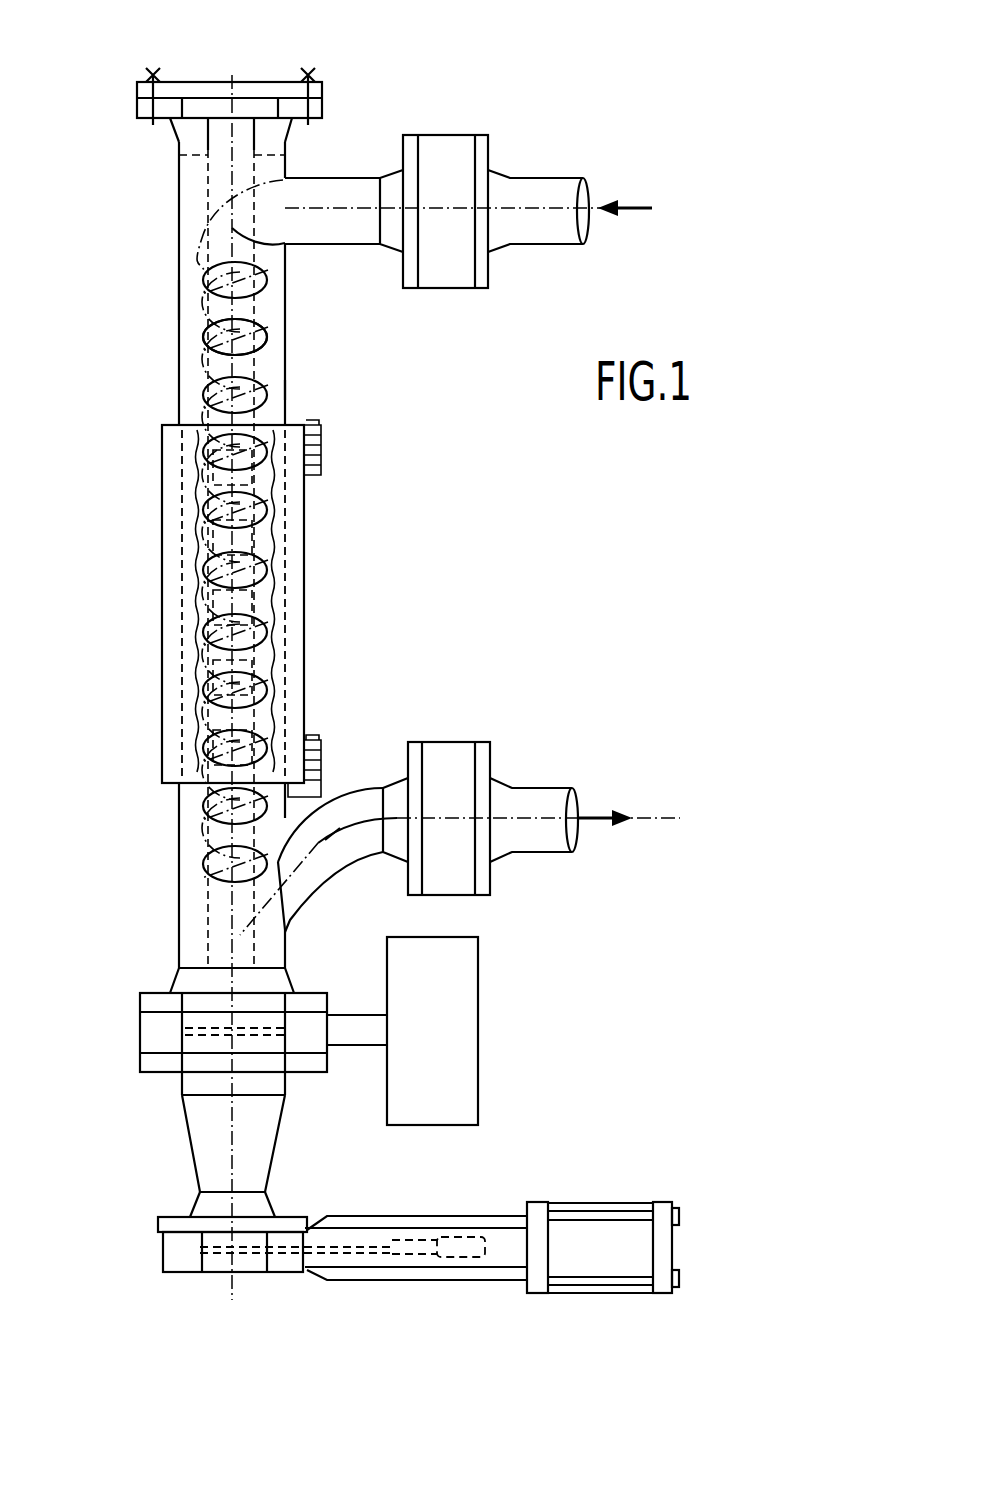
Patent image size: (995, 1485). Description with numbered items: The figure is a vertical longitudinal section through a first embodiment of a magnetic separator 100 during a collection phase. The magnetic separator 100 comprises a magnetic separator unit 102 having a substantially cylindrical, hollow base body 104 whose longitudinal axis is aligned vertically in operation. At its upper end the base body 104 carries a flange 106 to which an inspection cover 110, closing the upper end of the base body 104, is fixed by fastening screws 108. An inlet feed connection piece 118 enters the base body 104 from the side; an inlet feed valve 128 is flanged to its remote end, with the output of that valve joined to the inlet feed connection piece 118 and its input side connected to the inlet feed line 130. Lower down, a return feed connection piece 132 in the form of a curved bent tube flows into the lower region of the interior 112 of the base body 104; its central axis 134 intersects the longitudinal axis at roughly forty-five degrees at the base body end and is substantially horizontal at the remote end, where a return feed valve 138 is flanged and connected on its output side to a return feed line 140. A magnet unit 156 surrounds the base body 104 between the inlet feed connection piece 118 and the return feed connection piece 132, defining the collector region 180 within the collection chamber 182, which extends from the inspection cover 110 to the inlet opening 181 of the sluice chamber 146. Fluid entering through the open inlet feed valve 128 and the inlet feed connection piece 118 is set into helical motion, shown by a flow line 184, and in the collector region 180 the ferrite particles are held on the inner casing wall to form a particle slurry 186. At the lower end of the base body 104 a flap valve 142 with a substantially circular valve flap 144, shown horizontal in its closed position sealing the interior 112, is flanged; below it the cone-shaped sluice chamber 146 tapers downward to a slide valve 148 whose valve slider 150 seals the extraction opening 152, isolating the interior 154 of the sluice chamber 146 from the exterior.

The magnetic separator 100 is at (575, 108).
The magnetic separator unit 102 is at (170, 240).
The base body 104 is at (178, 300).
The flange 106 is at (320, 107).
The fastening screws 108 is at (308, 72).
The inspection cover 110 is at (210, 87).
The interior 112 is at (228, 945).
The inlet feed connection piece 118 is at (340, 178).
The inlet feed valve 128 is at (445, 150).
The inlet feed line 130 is at (557, 228).
The return feed connection piece 132 is at (358, 798).
The central axis 134 is at (328, 838).
The return feed valve 138 is at (443, 763).
The return feed line 140 is at (526, 790).
The flap valve 142 is at (157, 1060).
The valve flap 144 is at (172, 990).
The sluice chamber 146 is at (268, 1112).
The slide valve 148 is at (170, 1257).
The valve slider 150 is at (253, 1255).
The extraction opening 152 is at (208, 1258).
The interior 154 is at (258, 1153).
The magnet unit 156 is at (150, 585).
The collector region 180 is at (178, 468).
The inlet opening 181 is at (187, 1035).
The collection chamber 182 is at (295, 386).
The helical insert 184 is at (268, 325).
The particle slurry 186 is at (280, 497).